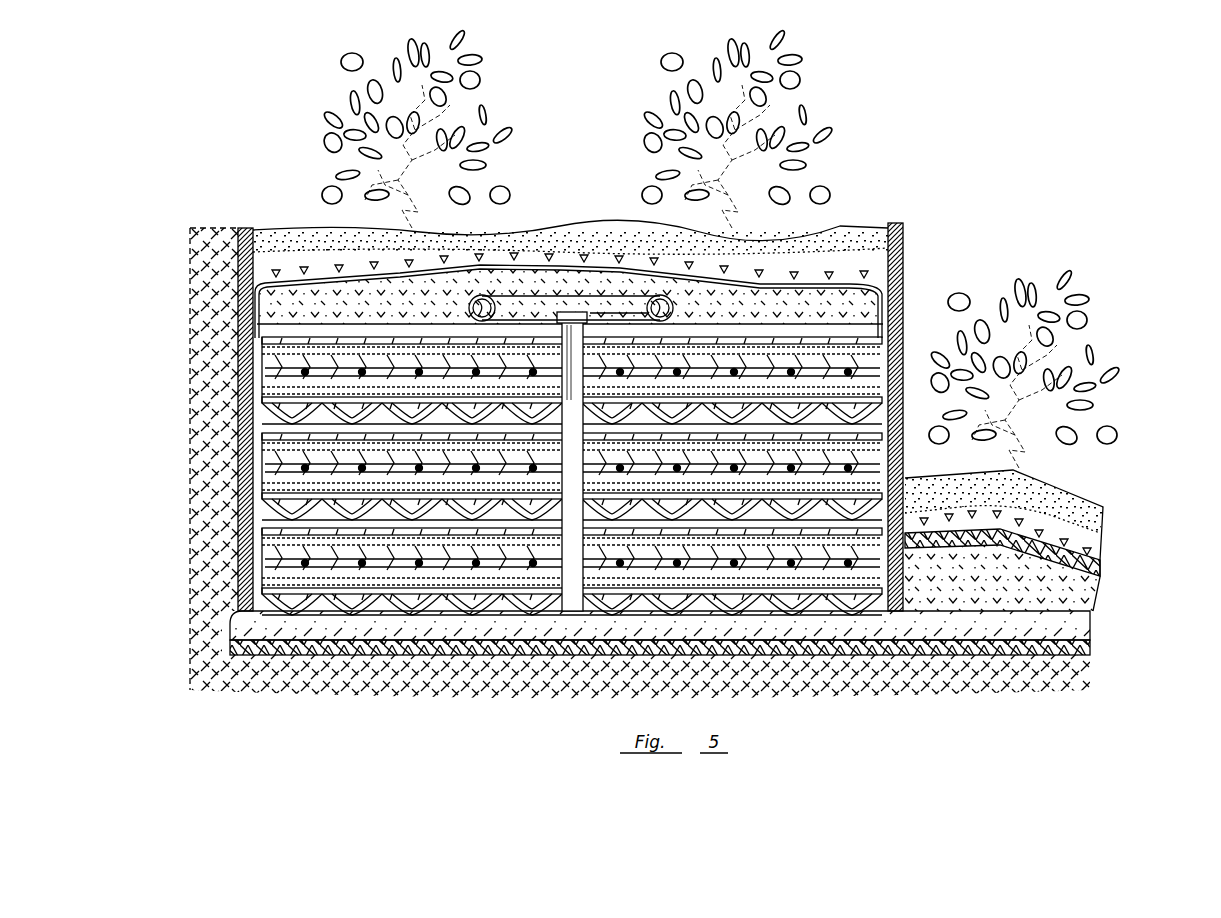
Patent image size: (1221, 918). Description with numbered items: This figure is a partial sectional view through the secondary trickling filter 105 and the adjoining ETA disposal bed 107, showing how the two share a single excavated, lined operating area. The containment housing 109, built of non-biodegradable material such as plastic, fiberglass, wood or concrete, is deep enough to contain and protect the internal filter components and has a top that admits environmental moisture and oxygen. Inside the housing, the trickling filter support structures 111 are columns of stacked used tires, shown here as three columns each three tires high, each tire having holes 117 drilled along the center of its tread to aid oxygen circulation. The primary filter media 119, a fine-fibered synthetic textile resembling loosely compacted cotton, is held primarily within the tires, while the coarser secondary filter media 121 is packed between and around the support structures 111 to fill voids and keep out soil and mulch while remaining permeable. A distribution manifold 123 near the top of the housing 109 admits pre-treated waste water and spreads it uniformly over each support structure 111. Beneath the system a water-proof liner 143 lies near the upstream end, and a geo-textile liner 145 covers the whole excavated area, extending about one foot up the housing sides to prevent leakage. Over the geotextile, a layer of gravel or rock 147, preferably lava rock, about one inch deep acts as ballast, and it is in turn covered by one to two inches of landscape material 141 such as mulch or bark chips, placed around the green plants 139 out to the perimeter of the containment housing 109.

The secondary trickling filter 105 is at (932, 220).
The ETA disposal bed 107 is at (1127, 491).
The containment housing 109 is at (240, 396).
The trickling filter support structures 111 is at (890, 300).
The holes 117 is at (475, 612).
The primary filter media 119 is at (975, 585).
The secondary filter media 121 is at (820, 282).
The distribution manifold 123 is at (612, 296).
The green plants 139 is at (490, 62).
The landscape material 141 is at (312, 232).
The water-proof liner 143 is at (240, 635).
The geo-textile liner 145 is at (520, 258).
The gravel or rock 147 is at (287, 262).